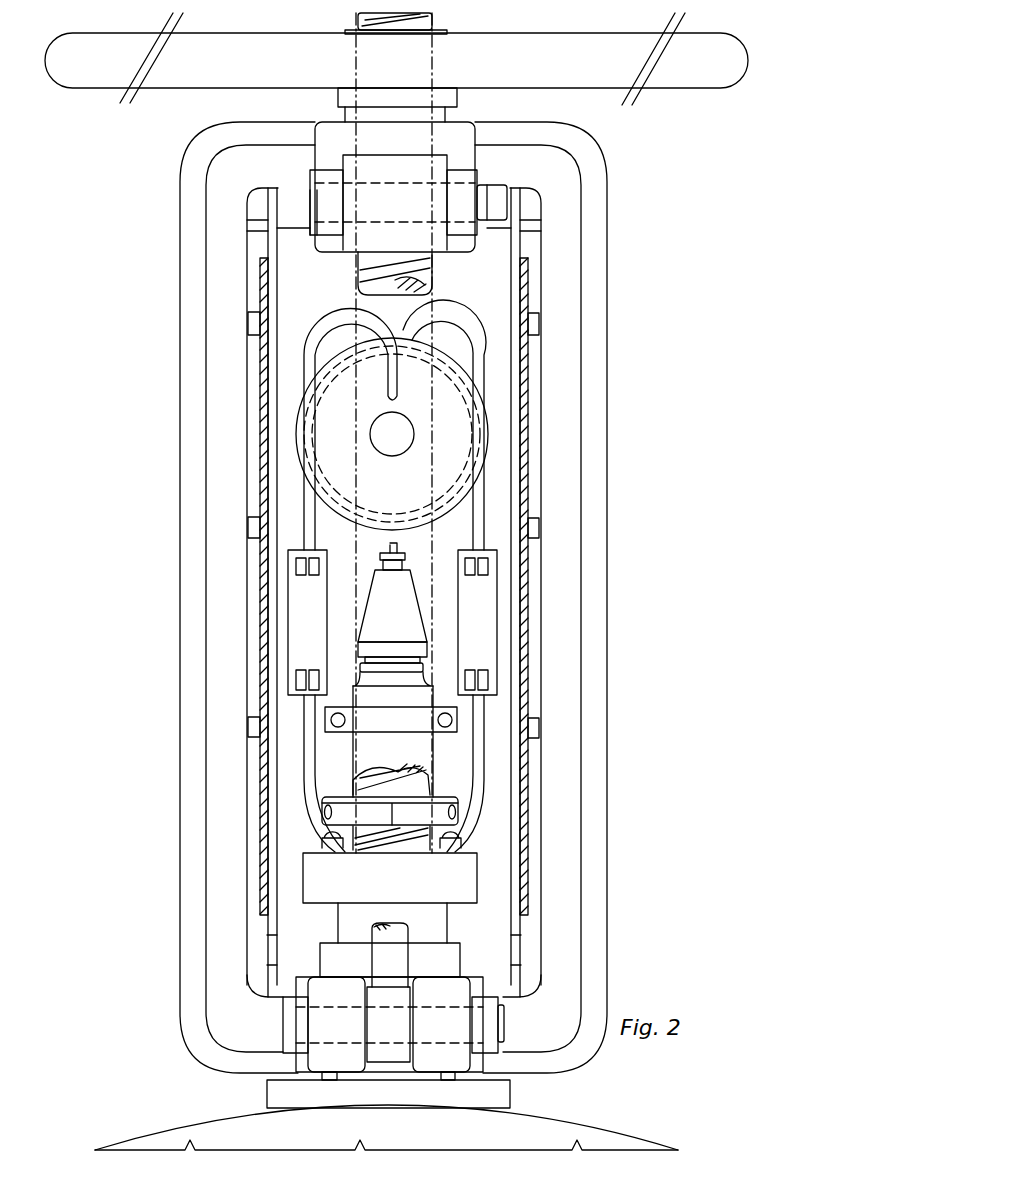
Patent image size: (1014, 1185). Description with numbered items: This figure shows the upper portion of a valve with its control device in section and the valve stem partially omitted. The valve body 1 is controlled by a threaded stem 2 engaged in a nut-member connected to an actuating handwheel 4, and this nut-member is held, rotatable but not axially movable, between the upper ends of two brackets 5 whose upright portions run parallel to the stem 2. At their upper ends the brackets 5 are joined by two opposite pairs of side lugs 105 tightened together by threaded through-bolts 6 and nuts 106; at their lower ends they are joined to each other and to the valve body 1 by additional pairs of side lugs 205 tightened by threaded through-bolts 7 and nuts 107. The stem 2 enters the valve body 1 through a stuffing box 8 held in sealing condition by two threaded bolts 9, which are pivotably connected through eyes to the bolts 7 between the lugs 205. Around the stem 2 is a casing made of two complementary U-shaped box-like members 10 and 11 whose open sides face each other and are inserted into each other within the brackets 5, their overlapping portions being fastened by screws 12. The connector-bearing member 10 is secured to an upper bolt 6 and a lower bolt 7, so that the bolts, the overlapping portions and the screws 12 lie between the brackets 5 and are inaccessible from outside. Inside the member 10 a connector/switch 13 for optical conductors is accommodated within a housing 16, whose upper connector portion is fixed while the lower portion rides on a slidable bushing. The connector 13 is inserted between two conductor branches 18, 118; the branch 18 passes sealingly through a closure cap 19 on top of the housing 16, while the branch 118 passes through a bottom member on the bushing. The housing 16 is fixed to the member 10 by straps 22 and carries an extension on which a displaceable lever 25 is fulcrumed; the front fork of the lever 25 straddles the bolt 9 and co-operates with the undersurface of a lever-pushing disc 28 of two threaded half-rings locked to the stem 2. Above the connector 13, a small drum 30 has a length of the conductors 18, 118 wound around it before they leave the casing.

The valve body 1 is at (620, 1130).
The threaded stem 2 is at (435, 20).
The actuating handwheel 4 is at (570, 42).
The brackets 5 is at (190, 330).
The threaded through-bolts 6 is at (520, 200).
The threaded through-bolts 7 is at (504, 1023).
The stuffing box 8 is at (470, 878).
The threaded bolts 9 is at (400, 945).
The connector-bearing member 10 is at (270, 772).
The box-like member 11 is at (258, 617).
The screws 12 is at (252, 322).
The connector/switch 13 is at (444, 675).
The housing 16 is at (420, 752).
The conductor branch 18 is at (305, 527).
The closure cap 19 is at (420, 606).
The straps 22 is at (420, 712).
The displaceable lever 25 is at (330, 838).
The lever-pushing disc 28 is at (460, 812).
The drum 30 is at (300, 415).
The side lugs 105 is at (348, 172).
The nuts 106 is at (320, 212).
The nuts 107 is at (288, 1028).
The conductor branch 118 is at (480, 752).
The side lugs 205 is at (333, 1062).